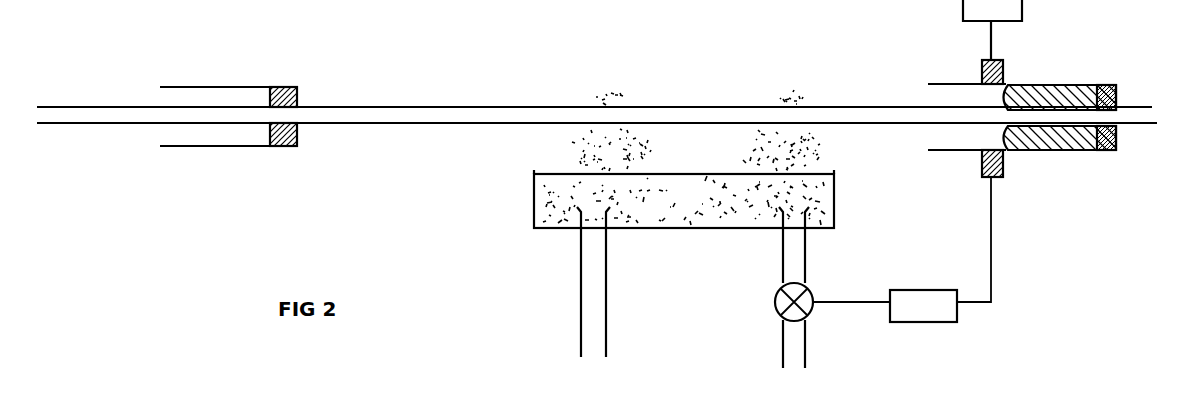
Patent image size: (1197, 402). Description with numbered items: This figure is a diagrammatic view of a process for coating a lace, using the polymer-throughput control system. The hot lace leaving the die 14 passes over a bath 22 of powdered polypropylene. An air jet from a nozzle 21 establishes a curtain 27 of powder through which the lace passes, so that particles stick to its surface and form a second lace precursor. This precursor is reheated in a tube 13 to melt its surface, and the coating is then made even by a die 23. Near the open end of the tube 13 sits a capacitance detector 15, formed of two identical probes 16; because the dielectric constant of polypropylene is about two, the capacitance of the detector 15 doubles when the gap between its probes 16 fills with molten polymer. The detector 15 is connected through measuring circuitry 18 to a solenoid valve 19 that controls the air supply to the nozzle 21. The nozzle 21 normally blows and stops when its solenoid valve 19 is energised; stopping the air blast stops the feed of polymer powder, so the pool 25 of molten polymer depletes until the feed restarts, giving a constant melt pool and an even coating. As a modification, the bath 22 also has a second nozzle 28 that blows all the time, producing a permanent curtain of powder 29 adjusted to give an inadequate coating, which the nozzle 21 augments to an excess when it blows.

The tube 13 is at (217, 96).
The die 14 is at (297, 88).
The capacitance detector 15 is at (1022, 67).
The probes 16 is at (982, 74).
The measuring circuitry 18 is at (947, 311).
The solenoid valve 19 is at (785, 303).
The nozzle 21 is at (807, 230).
The bath 22 is at (700, 212).
The die 23 is at (1116, 91).
The pool of molten polymer 25 is at (1078, 150).
The curtain 27 is at (791, 101).
The second nozzle 28 is at (592, 258).
The permanent curtain of powder 29 is at (595, 106).